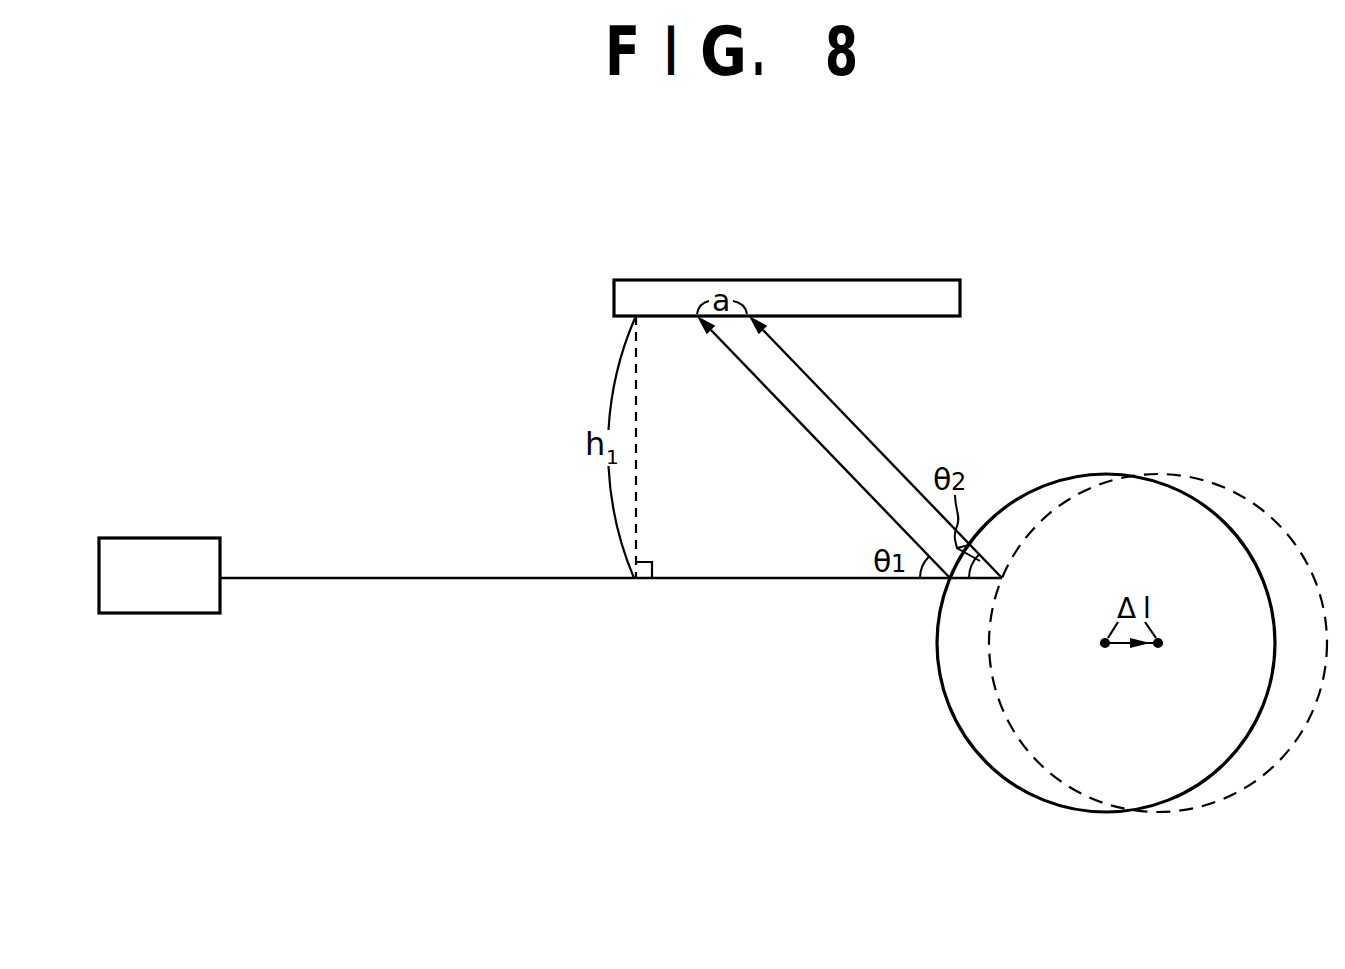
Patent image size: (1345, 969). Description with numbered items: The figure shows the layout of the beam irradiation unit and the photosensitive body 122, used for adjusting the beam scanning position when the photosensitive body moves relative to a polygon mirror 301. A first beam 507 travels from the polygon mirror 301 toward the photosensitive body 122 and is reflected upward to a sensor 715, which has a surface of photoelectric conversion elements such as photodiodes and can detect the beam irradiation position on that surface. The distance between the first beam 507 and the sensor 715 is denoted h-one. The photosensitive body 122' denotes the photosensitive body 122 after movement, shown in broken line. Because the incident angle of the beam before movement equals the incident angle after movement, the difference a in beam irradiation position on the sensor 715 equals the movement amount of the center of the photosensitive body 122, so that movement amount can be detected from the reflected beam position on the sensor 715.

The sensor 715 is at (805, 294).
The polygon mirror 301 is at (140, 557).
The first beam 507 is at (735, 580).
The photosensitive body 122 is at (1065, 643).
The photosensitive body after movement 122' is at (1158, 605).